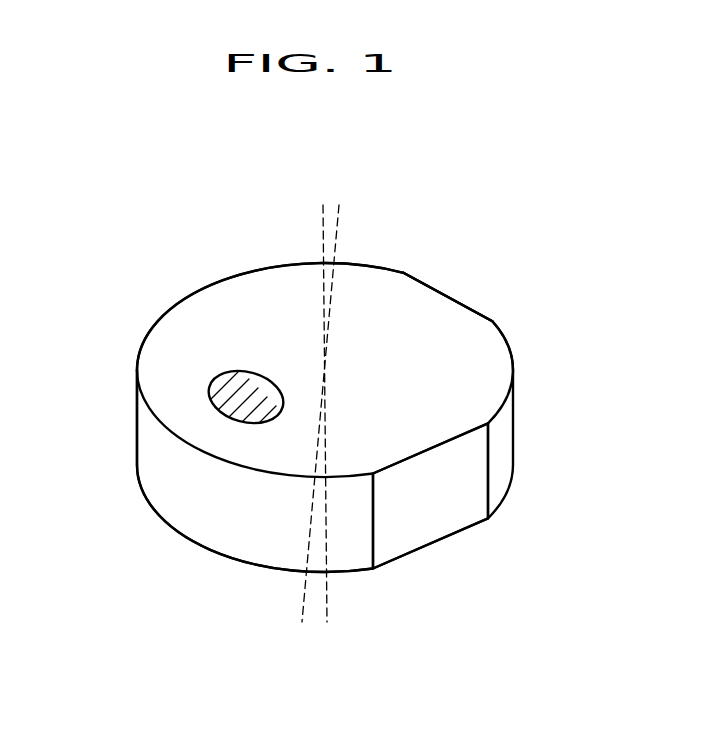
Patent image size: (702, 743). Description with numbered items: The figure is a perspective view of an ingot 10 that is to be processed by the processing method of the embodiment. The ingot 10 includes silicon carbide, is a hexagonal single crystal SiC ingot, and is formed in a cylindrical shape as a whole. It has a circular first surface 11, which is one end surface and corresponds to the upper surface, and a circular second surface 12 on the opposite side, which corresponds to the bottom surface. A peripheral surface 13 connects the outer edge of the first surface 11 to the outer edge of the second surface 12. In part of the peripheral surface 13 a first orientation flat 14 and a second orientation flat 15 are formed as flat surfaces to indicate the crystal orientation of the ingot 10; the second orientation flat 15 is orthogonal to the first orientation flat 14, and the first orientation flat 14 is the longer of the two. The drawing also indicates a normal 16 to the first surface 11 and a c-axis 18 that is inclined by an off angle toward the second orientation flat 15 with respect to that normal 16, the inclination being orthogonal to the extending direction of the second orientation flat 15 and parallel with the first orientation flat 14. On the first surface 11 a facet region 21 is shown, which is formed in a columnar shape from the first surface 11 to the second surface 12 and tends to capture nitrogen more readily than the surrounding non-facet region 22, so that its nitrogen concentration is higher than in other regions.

The ingot 10 is at (478, 237).
The first surface 11 is at (207, 312).
The second surface 12 is at (213, 551).
The peripheral surface 13 is at (153, 453).
The first orientation flat 14 is at (439, 527).
The second orientation flat 15 is at (468, 307).
The normal 16 is at (322, 235).
The c-axis 18 is at (337, 228).
The facet region 21 is at (243, 396).
The non-facet region 22 is at (399, 300).